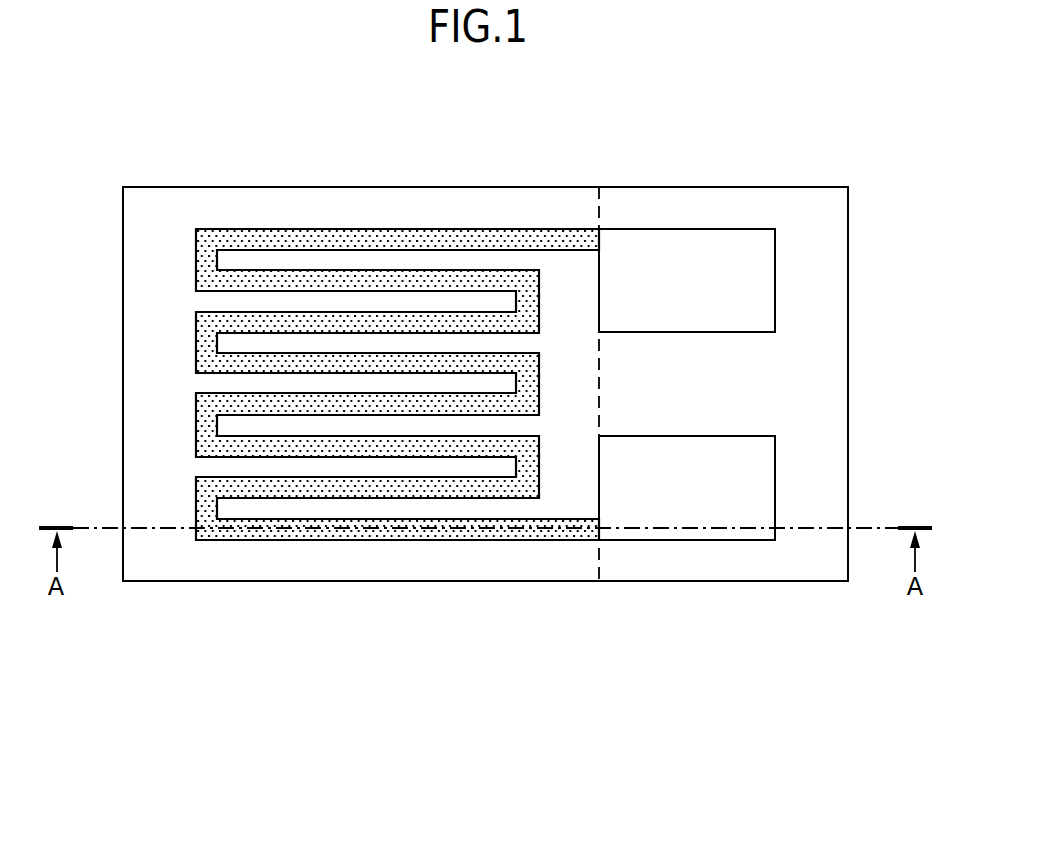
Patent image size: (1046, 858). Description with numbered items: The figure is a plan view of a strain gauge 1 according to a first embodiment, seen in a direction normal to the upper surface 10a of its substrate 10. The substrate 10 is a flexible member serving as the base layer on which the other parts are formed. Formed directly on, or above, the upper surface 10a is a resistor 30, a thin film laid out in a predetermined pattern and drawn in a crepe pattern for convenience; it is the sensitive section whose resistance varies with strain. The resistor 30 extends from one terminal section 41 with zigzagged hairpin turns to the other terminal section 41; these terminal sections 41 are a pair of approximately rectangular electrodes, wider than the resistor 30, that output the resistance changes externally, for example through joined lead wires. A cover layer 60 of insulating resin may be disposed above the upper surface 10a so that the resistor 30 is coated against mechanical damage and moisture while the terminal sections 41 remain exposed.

The strain gauge 1 is at (438, 343).
The substrate 10 is at (184, 176).
The upper surface 10a is at (288, 208).
The resistor 30 is at (432, 238).
The terminal sections 41 is at (697, 260).
The cover layer 60 is at (600, 208).